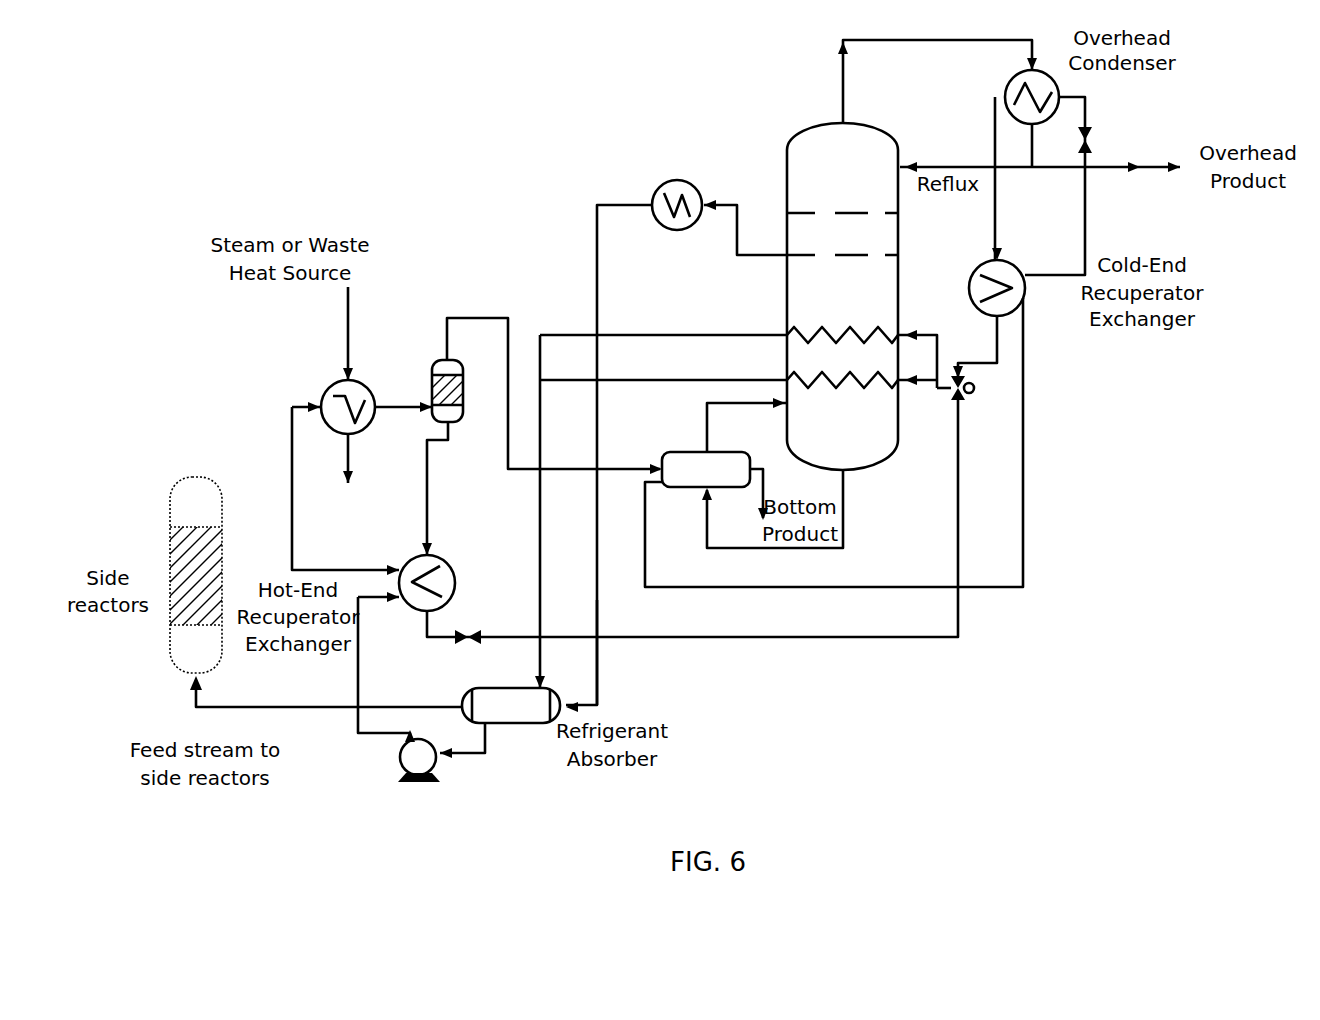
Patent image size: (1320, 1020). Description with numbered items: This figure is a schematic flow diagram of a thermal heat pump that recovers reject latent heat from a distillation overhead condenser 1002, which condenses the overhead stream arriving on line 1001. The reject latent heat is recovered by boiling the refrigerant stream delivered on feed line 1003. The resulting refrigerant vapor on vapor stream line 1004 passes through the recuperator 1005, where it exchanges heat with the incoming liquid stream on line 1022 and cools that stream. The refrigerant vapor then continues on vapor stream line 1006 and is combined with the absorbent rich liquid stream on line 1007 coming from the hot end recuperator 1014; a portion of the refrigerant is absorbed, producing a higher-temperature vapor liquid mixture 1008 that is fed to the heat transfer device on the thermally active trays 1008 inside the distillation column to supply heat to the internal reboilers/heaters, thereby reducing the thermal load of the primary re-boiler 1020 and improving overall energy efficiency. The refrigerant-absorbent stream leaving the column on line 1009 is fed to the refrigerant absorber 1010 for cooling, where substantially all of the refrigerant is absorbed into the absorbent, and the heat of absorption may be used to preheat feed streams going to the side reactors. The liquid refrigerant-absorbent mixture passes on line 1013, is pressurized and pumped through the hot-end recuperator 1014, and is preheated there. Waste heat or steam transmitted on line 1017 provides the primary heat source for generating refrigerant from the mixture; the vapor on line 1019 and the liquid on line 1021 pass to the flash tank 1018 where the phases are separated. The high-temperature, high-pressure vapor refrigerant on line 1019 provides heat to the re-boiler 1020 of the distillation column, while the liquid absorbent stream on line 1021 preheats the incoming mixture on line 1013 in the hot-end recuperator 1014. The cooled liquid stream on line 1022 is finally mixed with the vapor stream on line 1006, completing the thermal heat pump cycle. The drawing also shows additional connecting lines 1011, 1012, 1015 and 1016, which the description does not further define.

The line 1001 is at (840, 80).
The distillation overhead condenser 1002 is at (1012, 82).
The feed line 1003 is at (1090, 105).
The vapor stream line 1004 is at (995, 138).
The recuperator 1005 is at (975, 275).
The vapor stream line 1006 is at (995, 365).
The line 1007 is at (962, 595).
The vapor liquid mixture / thermally active trays 1008 is at (807, 380).
The line 1009 is at (540, 505).
The refrigerant absorber 1010 is at (520, 727).
The pump discharge line 1011 is at (358, 723).
The refrigerant return line 1012 is at (597, 660).
The line 1013 is at (362, 658).
The hot-end recuperator 1014 is at (405, 562).
The bypass line 1015 is at (290, 410).
The heated stream line 1016 is at (395, 410).
The line 1017 is at (348, 313).
The flash tank 1018 is at (440, 360).
The line 1019 is at (505, 318).
The re-boiler 1020 is at (682, 452).
The line 1021 is at (432, 452).
The line 1022 is at (706, 530).